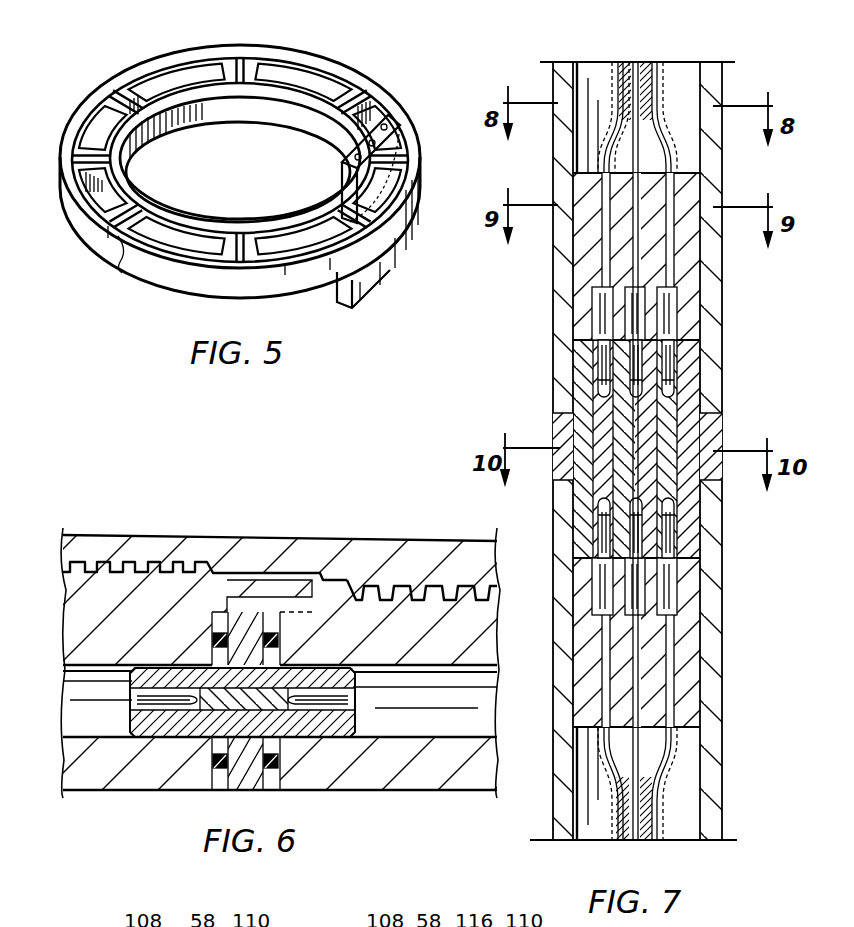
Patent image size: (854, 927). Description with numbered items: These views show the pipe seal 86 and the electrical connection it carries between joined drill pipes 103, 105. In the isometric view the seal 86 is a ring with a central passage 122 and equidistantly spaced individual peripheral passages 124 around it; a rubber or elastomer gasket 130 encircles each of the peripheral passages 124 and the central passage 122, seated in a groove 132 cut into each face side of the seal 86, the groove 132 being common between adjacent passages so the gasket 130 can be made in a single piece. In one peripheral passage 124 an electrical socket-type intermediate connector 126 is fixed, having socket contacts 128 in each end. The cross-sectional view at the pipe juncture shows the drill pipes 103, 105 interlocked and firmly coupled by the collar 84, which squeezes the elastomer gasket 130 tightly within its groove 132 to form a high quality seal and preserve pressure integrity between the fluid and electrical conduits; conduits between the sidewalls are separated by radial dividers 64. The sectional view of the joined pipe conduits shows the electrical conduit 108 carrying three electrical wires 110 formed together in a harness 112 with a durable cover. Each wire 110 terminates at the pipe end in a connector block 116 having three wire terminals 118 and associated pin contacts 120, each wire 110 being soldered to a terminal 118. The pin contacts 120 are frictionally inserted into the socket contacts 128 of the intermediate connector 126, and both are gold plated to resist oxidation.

In FIG. 7, the radial dividers 64 is at (553, 164).
In FIG. 6, the collar 84 is at (181, 544).
In FIG. 5, the seal 86 is at (275, 40).
In FIG. 6, the seal 86 is at (213, 616).
In FIG. 7, the seal 86 is at (722, 447).
In FIG. 6, the drill pipe 103 is at (68, 598).
In FIG. 6, the drill pipe 105 is at (498, 613).
In FIG. 6, the electrical conduit 108 is at (76, 729).
In FIG. 7, the electrical conduit 108 is at (696, 86).
In FIG. 7, the electrical wires 110 is at (652, 62).
In FIG. 7, the harness 112 is at (683, 62).
In FIG. 7, the connector block 116 is at (692, 262).
In FIG. 7, the wire terminals 118 is at (672, 325).
In FIG. 7, the pin contacts 120 is at (672, 365).
In FIG. 5, the central passage 122 is at (240, 159).
In FIG. 5, the peripheral passages 124 is at (105, 113).
In FIG. 5, the intermediate connector 126 is at (372, 298).
In FIG. 6, the intermediate connector 126 is at (350, 718).
In FIG. 7, the intermediate connector 126 is at (688, 413).
In FIG. 5, the socket contacts 128 is at (388, 116).
In FIG. 6, the socket contacts 128 is at (136, 699).
In FIG. 7, the socket contacts 128 is at (672, 381).
In FIG. 5, the elastomer gasket 130 is at (118, 270).
In FIG. 6, the elastomer gasket 130 is at (213, 636).
In FIG. 6, the groove 132 is at (213, 642).